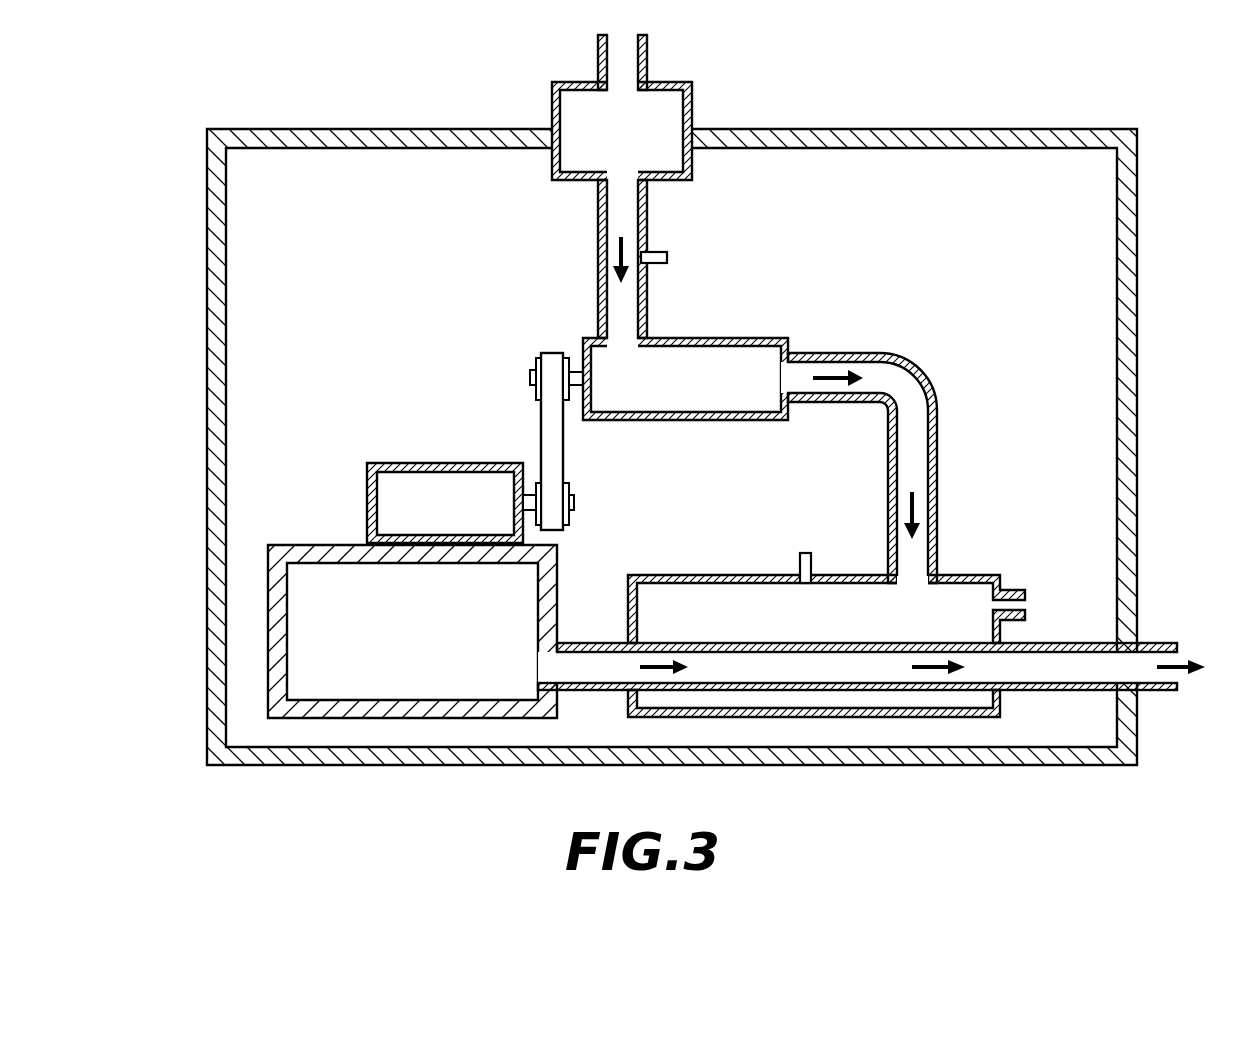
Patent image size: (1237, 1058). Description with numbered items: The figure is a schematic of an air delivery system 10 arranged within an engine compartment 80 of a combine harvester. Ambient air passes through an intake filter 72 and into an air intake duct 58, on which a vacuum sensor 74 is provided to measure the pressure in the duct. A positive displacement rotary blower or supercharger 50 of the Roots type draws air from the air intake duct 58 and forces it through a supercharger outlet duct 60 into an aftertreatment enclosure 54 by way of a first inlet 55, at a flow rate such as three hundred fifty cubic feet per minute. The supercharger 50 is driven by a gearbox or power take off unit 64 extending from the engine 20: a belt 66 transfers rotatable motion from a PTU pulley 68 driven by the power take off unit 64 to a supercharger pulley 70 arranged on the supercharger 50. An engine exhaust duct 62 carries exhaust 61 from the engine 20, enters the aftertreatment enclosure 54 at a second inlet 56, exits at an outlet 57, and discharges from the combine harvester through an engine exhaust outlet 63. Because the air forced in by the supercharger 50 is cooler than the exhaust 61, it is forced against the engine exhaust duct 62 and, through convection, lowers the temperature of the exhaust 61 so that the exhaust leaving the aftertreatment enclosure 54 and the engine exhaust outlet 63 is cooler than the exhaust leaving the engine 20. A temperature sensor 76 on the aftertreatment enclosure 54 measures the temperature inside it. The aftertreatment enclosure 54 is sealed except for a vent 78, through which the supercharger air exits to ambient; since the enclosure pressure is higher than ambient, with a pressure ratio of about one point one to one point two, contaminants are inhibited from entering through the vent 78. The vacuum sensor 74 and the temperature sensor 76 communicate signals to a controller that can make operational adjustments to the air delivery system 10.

The air delivery system 10 is at (708, 400).
The engine 20 is at (347, 602).
The supercharger 50 is at (718, 358).
The aftertreatment enclosure 54 is at (652, 600).
The first inlet 55 is at (935, 572).
The second inlet 56 is at (630, 700).
The outlet 57 is at (1000, 700).
The air intake duct 58 is at (610, 217).
The supercharger outlet duct 60 is at (887, 464).
The exhaust 61 is at (748, 672).
The engine exhaust duct 62 is at (873, 674).
The engine exhaust outlet 63 is at (1160, 690).
The power take off unit 64 is at (398, 485).
The belt 66 is at (548, 430).
The PTU pulley 68 is at (570, 505).
The supercharger pulley 70 is at (533, 372).
The intake filter 72 is at (577, 109).
The vacuum sensor 74 is at (660, 252).
The temperature sensor 76 is at (813, 565).
The vent 78 is at (1015, 600).
The engine compartment 80 is at (334, 228).